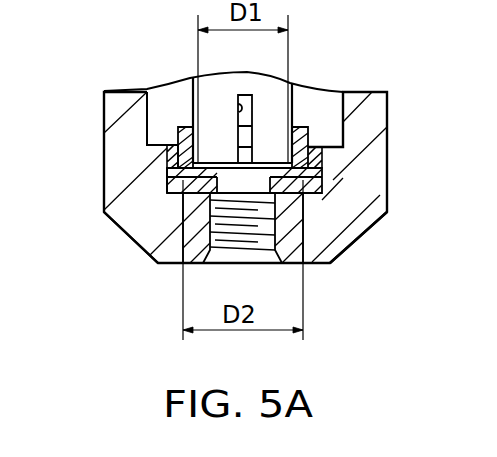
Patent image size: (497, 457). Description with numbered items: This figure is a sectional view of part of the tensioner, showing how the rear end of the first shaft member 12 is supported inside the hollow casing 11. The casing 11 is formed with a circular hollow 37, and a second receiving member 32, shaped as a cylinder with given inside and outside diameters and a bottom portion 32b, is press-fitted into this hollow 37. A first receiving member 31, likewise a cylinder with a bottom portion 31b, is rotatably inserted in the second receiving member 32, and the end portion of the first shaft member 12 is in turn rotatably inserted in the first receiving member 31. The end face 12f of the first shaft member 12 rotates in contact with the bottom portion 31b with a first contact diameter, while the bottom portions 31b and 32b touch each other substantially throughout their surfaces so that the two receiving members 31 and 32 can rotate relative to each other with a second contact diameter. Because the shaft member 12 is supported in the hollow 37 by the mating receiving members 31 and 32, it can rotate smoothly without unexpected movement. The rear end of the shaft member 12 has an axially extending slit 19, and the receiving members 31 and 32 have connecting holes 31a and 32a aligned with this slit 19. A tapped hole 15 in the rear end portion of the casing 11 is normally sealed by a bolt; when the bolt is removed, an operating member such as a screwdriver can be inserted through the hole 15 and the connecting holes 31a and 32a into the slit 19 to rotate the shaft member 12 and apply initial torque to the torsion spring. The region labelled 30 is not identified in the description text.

The casing 11 is at (370, 195).
The first shaft member 12 is at (267, 97).
The end face 12f is at (292, 176).
The tapped hole 15 is at (237, 237).
The slit 19 is at (237, 108).
The upper chamber 30 is at (183, 98).
The first receiving member 31 is at (308, 136).
The connecting hole 31a is at (265, 163).
The bottom portion 31b is at (183, 133).
The second receiving member 32 is at (322, 160).
The connecting hole 32a is at (318, 248).
The bottom portion 32b is at (165, 170).
The circular hollow 37 is at (165, 182).